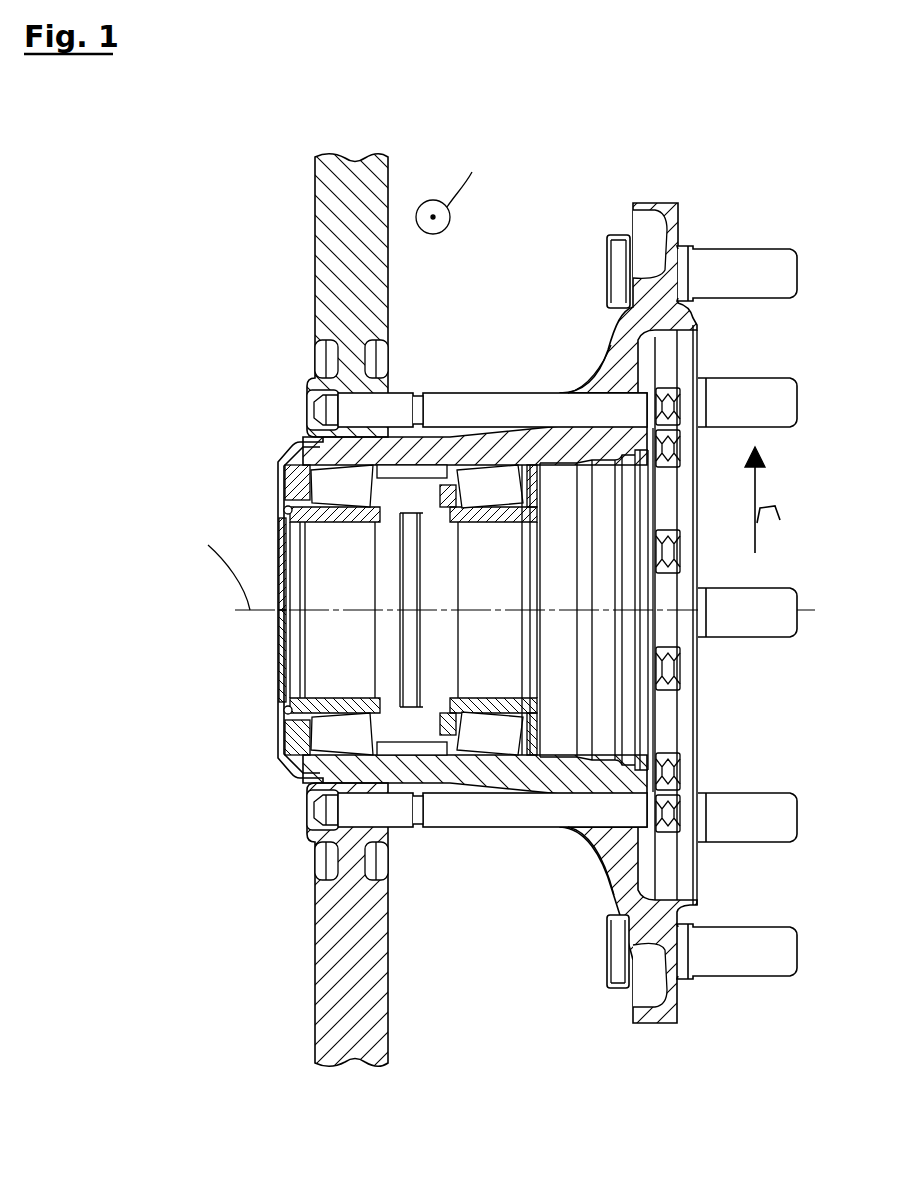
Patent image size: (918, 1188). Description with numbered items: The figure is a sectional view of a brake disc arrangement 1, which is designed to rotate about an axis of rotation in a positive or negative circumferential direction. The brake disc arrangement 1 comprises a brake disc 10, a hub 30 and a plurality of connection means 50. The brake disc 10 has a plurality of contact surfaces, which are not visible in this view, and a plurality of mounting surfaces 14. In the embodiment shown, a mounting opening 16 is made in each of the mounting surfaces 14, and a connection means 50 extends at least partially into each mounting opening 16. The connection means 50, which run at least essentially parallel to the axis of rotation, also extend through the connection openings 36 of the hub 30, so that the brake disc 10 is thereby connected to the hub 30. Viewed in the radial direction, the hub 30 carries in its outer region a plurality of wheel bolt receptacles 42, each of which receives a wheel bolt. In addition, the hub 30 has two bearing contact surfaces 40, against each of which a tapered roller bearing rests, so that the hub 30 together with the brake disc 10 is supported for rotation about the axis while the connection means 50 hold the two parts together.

The brake disc arrangement 1 is at (505, 612).
The brake disc 10 is at (511, 559).
The mounting surfaces 14 is at (390, 385).
The mounting opening 16 is at (315, 847).
The hub 30 is at (638, 170).
The connection openings 36 is at (600, 842).
The bearing contact surfaces 40 is at (485, 465).
The wheel bolt receptacles 42 is at (600, 997).
The connection means 50 is at (548, 407).